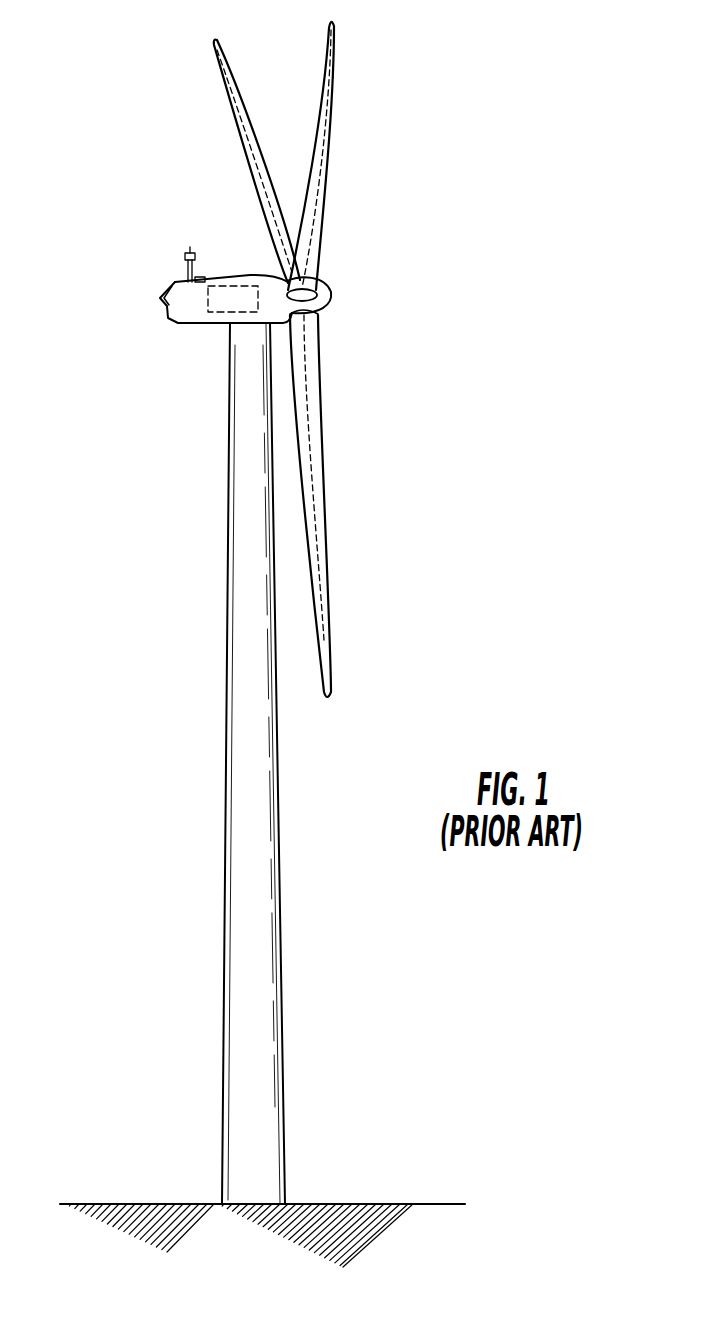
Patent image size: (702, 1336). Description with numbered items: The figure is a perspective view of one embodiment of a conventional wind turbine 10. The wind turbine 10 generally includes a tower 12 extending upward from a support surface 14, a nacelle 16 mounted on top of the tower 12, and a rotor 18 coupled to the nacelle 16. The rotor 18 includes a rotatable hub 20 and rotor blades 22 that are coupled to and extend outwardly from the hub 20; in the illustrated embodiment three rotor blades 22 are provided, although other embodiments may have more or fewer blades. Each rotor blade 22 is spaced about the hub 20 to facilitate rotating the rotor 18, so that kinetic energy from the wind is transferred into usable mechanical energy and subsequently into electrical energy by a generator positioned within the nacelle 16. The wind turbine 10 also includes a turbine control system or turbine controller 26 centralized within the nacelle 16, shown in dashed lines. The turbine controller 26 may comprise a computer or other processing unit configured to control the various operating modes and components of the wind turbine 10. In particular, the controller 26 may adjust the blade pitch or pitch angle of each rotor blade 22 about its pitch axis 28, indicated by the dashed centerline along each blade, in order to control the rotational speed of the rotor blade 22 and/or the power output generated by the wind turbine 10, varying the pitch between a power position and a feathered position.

The wind turbine 10 is at (433, 108).
The tower 12 is at (237, 886).
The support surface 14 is at (143, 1204).
The nacelle 16 is at (203, 327).
The rotor 18 is at (340, 265).
The rotatable hub 20 is at (328, 305).
The rotor blade 22 is at (253, 138).
The turbine controller 26 is at (237, 285).
The pitch axis 28 is at (250, 178).